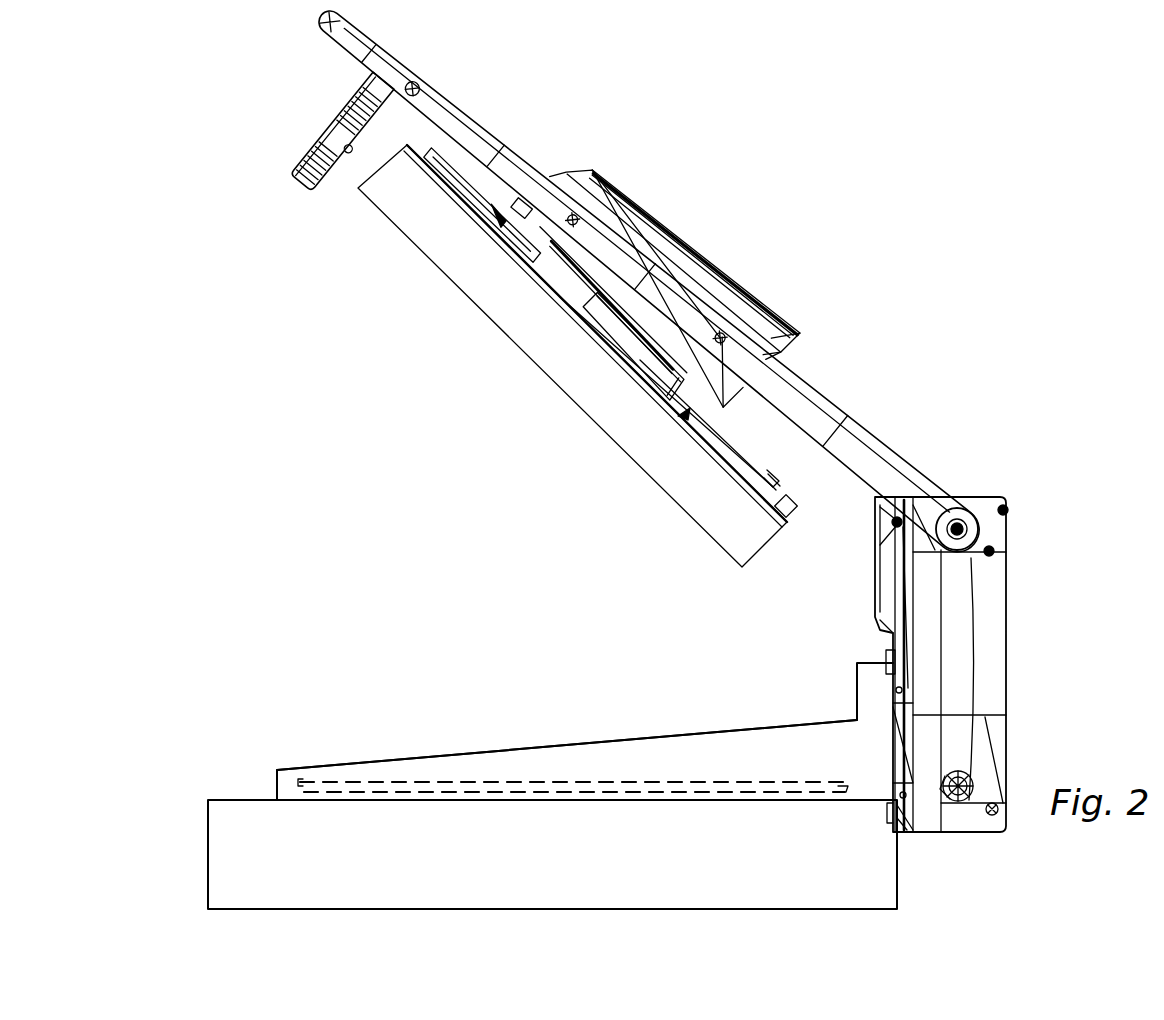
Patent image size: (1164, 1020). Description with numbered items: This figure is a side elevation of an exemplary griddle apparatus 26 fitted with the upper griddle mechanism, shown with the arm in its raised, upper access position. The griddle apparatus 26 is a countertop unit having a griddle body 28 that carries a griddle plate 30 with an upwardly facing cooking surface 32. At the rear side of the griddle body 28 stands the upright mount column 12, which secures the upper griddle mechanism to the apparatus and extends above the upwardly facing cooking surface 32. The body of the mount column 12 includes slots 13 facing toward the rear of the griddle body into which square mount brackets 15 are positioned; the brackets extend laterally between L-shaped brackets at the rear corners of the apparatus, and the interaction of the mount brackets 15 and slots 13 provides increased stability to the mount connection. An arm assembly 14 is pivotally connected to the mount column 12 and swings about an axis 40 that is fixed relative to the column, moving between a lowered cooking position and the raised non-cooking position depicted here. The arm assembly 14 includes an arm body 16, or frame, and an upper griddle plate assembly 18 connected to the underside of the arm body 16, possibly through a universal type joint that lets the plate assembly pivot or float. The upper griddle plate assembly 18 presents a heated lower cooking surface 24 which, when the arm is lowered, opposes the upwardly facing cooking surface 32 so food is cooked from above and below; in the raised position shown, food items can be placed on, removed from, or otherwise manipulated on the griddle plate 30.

The mount column 12 is at (985, 594).
The slots 13 is at (910, 690).
The arm assembly 14 is at (800, 370).
The square mount brackets 15 is at (897, 688).
The arm body 16 is at (485, 140).
The upper griddle plate assembly 18 is at (470, 272).
The lower cooking surface 24 is at (532, 364).
The griddle apparatus 26 is at (236, 831).
The griddle body 28 is at (278, 842).
The griddle plate 30 is at (430, 782).
The upwardly facing cooking surface 32 is at (560, 778).
The axis 40 is at (958, 524).